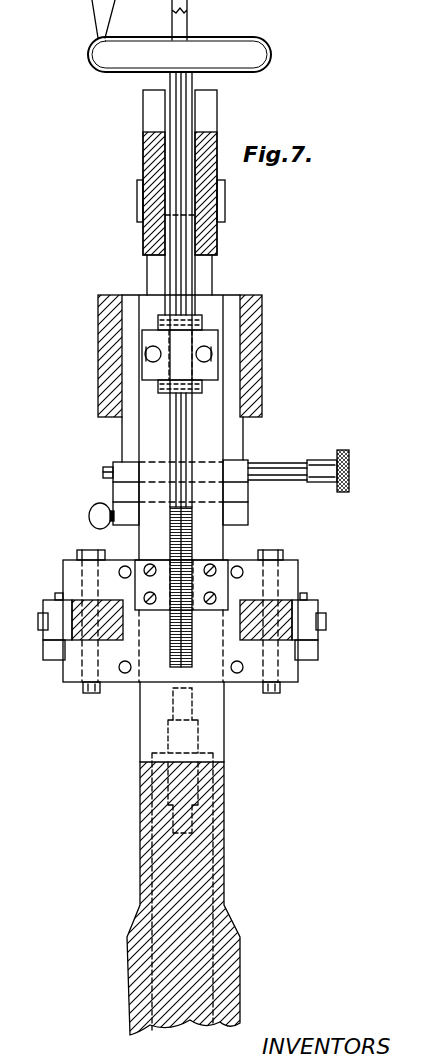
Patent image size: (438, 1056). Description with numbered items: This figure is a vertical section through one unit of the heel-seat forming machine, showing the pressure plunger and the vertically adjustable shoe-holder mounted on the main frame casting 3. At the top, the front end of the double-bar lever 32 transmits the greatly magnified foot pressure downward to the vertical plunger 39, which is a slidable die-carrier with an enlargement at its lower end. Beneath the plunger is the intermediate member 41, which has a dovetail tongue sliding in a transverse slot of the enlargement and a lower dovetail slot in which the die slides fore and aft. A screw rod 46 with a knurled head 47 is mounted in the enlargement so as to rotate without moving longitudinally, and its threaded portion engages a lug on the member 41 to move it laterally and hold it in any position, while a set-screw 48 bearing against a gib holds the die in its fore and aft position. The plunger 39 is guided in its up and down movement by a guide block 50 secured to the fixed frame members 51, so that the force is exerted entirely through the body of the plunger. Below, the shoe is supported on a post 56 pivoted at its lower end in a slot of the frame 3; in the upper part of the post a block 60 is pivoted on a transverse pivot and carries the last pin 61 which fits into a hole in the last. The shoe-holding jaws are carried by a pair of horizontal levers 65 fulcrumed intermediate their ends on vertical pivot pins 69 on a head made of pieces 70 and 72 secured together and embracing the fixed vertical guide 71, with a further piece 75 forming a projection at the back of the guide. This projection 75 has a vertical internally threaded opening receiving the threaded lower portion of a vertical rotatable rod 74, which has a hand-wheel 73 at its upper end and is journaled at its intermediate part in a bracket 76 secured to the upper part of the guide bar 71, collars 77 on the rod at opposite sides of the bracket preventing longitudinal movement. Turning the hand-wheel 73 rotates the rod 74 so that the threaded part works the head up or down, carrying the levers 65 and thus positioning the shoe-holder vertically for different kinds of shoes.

The main frame casting 3 is at (220, 898).
The lever 32 is at (215, 142).
The vertical plunger 39 is at (208, 270).
The intermediate member 41 is at (247, 510).
The screw rod 46 is at (287, 463).
The knurled head 47 is at (345, 455).
The set-screw 48 is at (88, 517).
The guide block 50 is at (126, 424).
The fixed frame members 51 is at (98, 355).
The post 56 is at (212, 850).
The block 60 is at (200, 740).
The last pin 61 is at (173, 700).
The horizontal levers 65 is at (92, 630).
The vertical pivot pins 69 is at (90, 552).
The head 70 is at (110, 687).
The vertical guide 71 is at (225, 713).
The head piece 72 is at (255, 655).
The hand-wheel 73 is at (260, 50).
The vertical rotatable rod 74 is at (180, 190).
The head projection 75 is at (163, 602).
The bracket 76 is at (207, 333).
The collars 77 is at (198, 315).